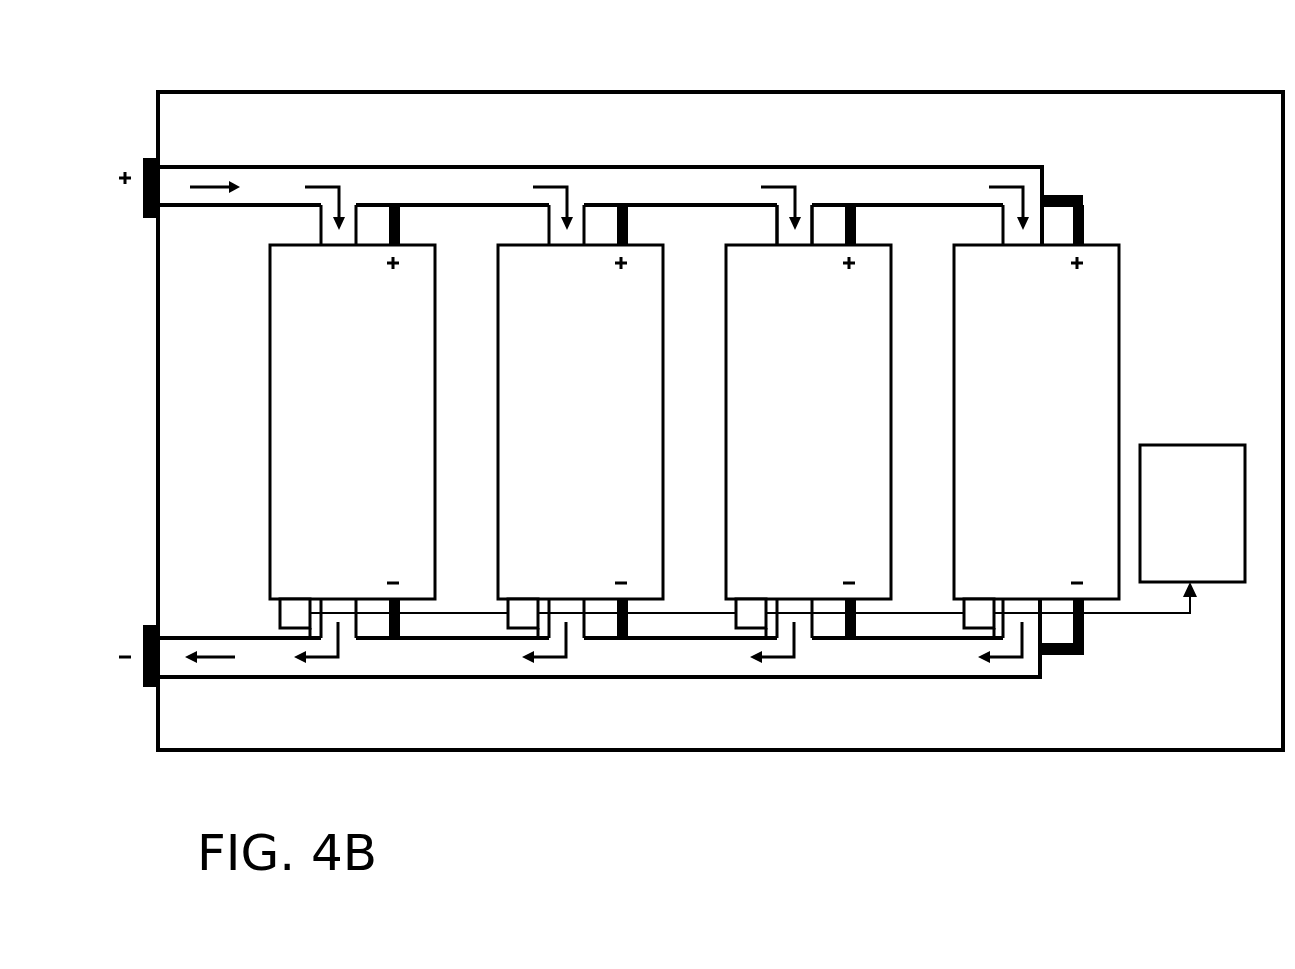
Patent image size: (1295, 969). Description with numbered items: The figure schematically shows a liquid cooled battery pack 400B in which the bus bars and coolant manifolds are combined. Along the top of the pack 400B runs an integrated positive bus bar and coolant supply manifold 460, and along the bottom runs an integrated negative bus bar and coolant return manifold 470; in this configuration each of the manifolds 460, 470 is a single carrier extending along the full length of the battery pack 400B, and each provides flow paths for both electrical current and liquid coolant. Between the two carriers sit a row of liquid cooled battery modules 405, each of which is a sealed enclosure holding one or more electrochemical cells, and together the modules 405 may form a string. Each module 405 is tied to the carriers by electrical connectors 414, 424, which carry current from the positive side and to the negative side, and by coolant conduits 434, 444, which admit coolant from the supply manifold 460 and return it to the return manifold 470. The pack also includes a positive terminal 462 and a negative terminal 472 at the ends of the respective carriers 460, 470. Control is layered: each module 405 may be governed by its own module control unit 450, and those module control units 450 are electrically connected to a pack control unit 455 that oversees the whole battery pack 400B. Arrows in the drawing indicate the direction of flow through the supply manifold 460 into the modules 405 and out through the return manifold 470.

The battery pack 400B is at (720, 421).
The battery module 405 is at (1119, 318).
The electrical connector 414 is at (389, 218).
The electrical connector 424 is at (400, 630).
The coolant conduit 434 is at (775, 228).
The coolant conduit 444 is at (1040, 620).
The module control unit 450 is at (765, 617).
The pack control unit 455 is at (1192, 513).
The integrated positive bus bar and coolant supply manifold 460 is at (673, 167).
The positive pack terminal 462 is at (152, 216).
The integrated negative bus bar and coolant return manifold 470 is at (702, 678).
The negative pack terminal 472 is at (155, 622).